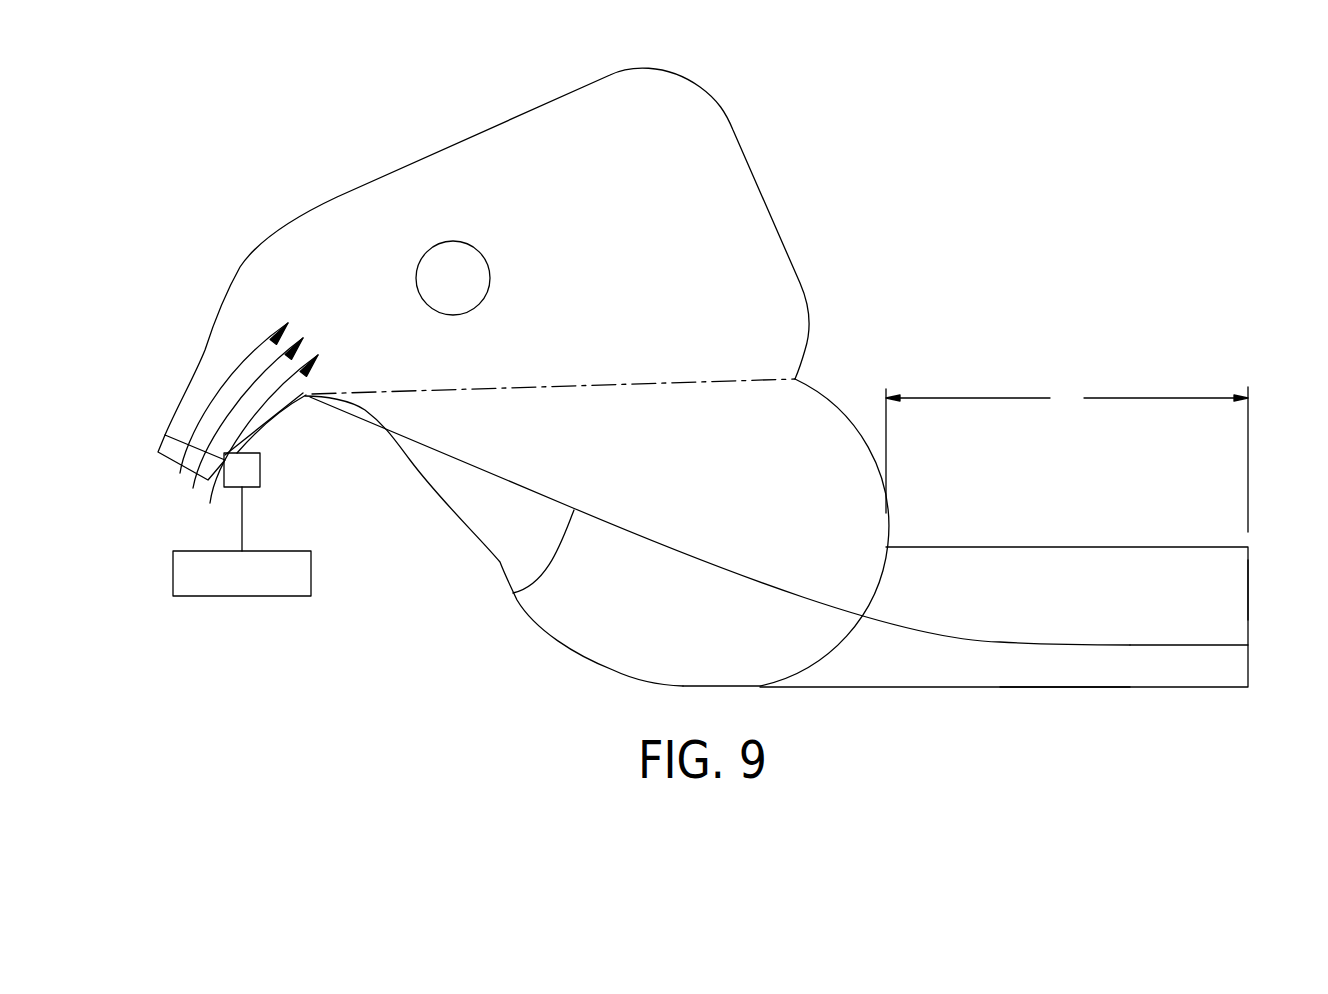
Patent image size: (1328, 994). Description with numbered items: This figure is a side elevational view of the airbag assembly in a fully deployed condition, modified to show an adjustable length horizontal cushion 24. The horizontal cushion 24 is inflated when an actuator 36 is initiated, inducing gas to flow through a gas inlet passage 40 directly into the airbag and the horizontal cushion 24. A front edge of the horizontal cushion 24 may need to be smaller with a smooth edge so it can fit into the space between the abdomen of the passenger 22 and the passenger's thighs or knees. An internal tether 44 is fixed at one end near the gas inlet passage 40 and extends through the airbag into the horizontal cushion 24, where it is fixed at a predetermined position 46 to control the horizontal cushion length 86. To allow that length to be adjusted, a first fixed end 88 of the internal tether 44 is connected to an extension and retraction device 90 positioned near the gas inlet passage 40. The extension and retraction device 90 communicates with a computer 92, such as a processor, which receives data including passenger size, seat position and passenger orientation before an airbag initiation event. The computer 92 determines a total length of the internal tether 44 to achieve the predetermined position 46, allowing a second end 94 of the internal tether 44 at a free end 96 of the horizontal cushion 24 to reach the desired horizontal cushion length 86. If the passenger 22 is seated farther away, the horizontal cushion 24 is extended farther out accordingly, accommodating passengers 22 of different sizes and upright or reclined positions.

The passenger 22 is at (880, 181).
The horizontal cushion 24 is at (1048, 568).
The actuator 36 is at (160, 455).
The gas inlet passage 40 is at (148, 438).
The internal tether 44 is at (517, 593).
The predetermined position 46 is at (1080, 645).
The horizontal cushion length 86 is at (1067, 458).
The first fixed end 88 is at (260, 425).
The extension and retraction device 90 is at (254, 482).
The computer 92 is at (256, 587).
The second end 94 is at (1244, 645).
The free end 96 is at (1260, 577).